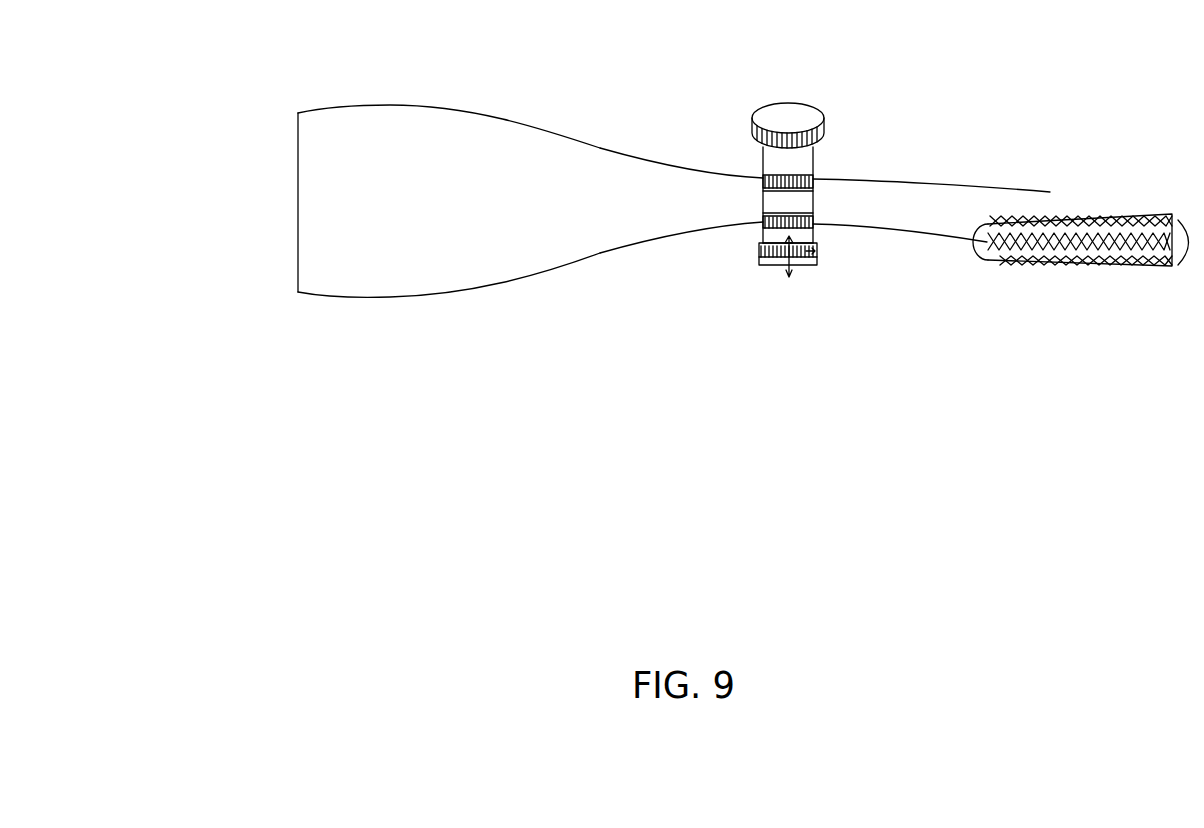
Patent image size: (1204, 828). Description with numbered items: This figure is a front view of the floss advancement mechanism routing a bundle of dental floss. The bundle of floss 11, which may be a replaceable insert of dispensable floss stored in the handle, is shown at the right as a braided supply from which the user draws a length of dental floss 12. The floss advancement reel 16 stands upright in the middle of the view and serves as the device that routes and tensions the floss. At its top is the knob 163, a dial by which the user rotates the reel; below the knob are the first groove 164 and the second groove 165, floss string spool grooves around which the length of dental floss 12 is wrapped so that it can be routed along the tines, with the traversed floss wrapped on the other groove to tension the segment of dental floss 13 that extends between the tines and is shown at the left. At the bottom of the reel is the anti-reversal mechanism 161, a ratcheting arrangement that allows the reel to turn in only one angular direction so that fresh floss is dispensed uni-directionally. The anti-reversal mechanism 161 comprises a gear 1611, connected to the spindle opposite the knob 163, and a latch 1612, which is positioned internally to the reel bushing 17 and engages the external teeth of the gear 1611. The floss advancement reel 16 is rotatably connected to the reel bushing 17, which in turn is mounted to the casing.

The bundle of floss 11 is at (1090, 265).
The length of dental floss 12 is at (633, 242).
The segment of dental floss 13 is at (298, 182).
The floss advancement reel 16 is at (820, 199).
The anti-reversal mechanism 161 is at (881, 298).
The gear 1611 is at (792, 265).
The latch 1612 is at (817, 255).
The knob 163 is at (767, 108).
The first groove 164 is at (813, 219).
The second groove 165 is at (763, 179).
The reel bushing 17 is at (777, 265).